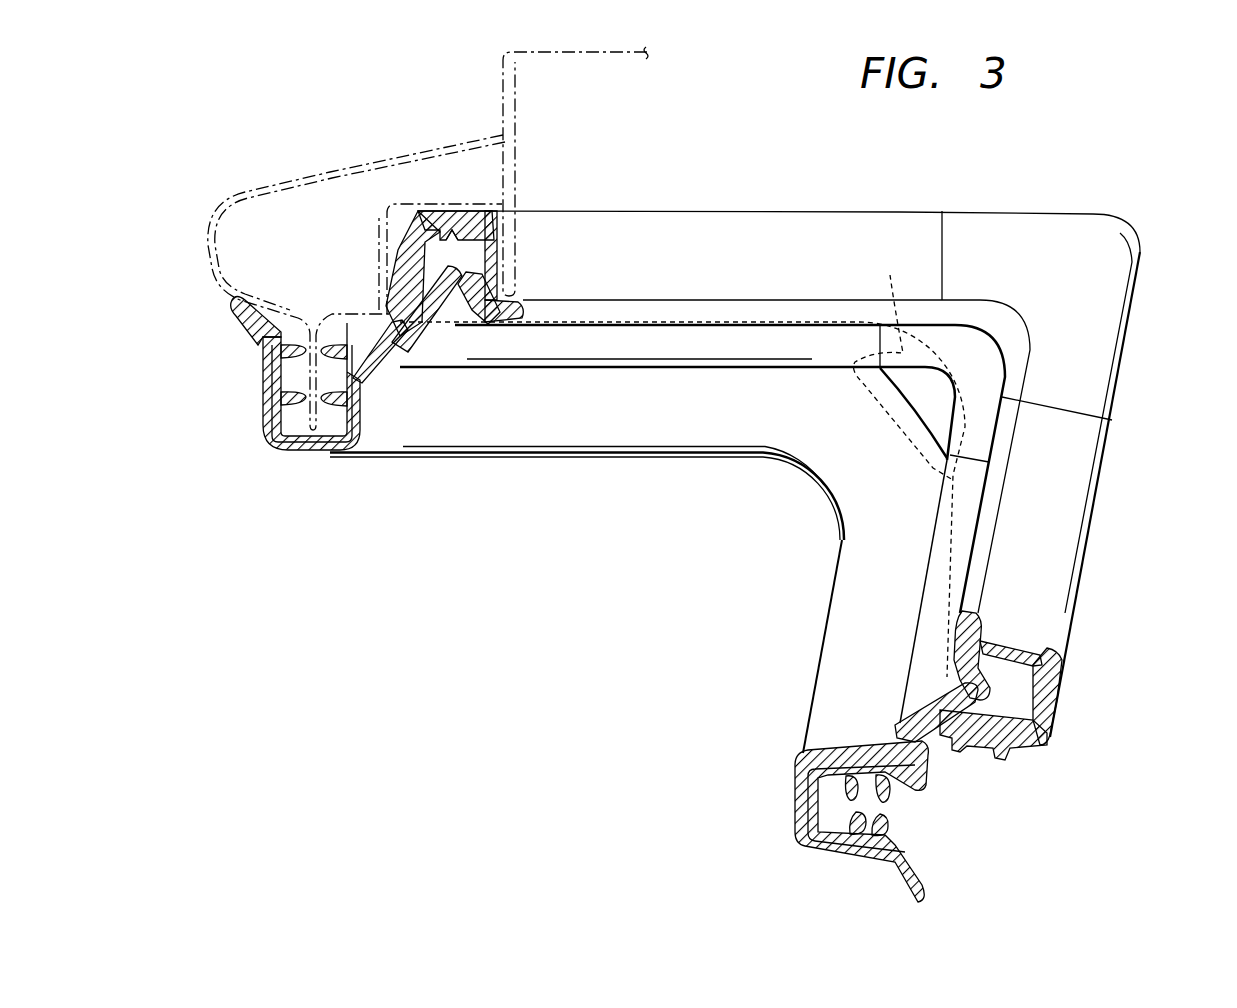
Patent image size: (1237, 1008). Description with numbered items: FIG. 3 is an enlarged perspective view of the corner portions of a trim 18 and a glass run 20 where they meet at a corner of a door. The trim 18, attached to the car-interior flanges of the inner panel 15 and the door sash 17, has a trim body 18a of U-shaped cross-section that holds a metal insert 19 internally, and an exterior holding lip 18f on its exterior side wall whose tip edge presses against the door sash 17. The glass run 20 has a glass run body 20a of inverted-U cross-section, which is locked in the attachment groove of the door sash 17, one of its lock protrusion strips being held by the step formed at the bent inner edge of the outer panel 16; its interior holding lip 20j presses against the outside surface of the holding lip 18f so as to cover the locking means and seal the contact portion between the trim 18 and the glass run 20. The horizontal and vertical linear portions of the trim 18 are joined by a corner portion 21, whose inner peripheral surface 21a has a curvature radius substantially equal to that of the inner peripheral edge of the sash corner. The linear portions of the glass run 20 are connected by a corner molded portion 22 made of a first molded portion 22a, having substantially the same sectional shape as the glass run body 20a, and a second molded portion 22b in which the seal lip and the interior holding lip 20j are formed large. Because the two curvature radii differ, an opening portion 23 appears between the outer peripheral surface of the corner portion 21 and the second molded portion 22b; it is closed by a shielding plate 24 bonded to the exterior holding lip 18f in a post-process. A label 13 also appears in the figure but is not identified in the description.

The body panel 13 is at (388, 167).
The inner panel 15 is at (326, 170).
The outer panel 16 is at (516, 152).
The door sash 17 is at (380, 255).
The trim 18 is at (280, 442).
The trim body 18a is at (266, 430).
The exterior holding lip 18f is at (383, 370).
The metal insert 19 is at (315, 443).
The glass run 20 is at (437, 341).
The glass run body 20a is at (453, 228).
The interior holding lip 20j is at (398, 358).
The corner portion 21 is at (833, 493).
The inner peripheral surface 21a is at (792, 470).
The corner molded portion 22 is at (1110, 287).
The first molded portion 22a is at (1105, 355).
The second molded portion 22b is at (980, 433).
The opening portion 23 is at (927, 395).
The shielding plate 24 is at (682, 462).